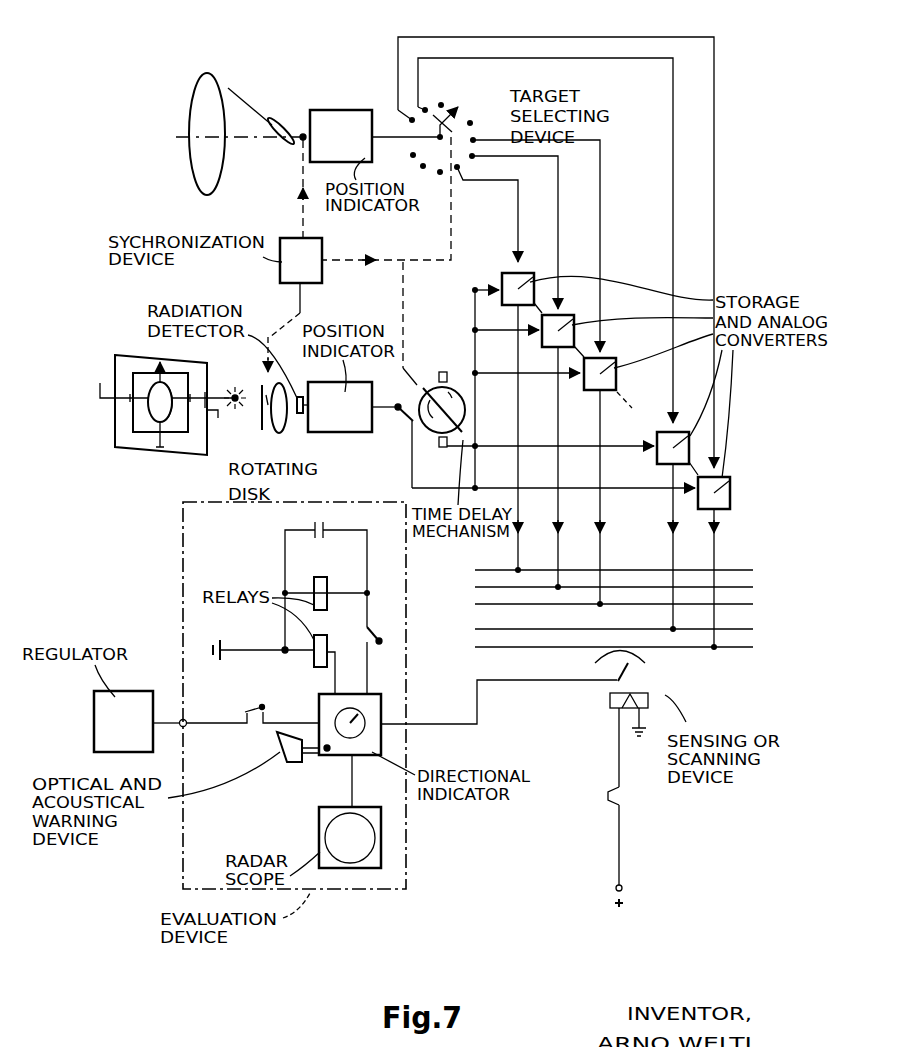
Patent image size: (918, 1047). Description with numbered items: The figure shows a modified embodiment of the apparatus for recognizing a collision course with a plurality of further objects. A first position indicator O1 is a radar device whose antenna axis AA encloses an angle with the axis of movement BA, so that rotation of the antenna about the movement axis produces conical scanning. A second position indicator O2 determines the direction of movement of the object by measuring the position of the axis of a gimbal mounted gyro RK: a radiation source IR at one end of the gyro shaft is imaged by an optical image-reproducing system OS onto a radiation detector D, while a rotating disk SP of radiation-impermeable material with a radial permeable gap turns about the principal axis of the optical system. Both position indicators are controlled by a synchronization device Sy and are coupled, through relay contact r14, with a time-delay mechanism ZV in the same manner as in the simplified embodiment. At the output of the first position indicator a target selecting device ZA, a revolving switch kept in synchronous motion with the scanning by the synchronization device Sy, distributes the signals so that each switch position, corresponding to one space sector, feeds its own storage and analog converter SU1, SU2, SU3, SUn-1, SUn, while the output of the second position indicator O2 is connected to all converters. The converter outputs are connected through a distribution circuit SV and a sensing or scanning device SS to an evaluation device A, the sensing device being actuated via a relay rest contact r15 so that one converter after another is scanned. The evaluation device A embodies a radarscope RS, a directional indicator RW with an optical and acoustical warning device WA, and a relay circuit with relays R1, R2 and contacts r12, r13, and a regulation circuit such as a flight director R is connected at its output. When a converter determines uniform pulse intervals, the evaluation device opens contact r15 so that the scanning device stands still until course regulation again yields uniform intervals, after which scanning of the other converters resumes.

The antenna axis AA is at (204, 76).
The axis of movement BA is at (222, 136).
The first position indicator O1 is at (341, 125).
The target selecting device ZA is at (556, 252).
The synchronization device Sy is at (317, 260).
The storage and analog converter SU1 is at (498, 414).
The storage and analog converter SU2 is at (578, 439).
The storage and analog converter SU3 is at (617, 469).
The storage and analog converter SUn-1 is at (650, 519).
The storage and analog converter SUn is at (731, 547).
The gimbal mounted gyro RK is at (159, 414).
The radiation source IR is at (236, 388).
The rotating disk SP is at (258, 430).
The optical image-reproducing system OS is at (282, 433).
The radiation detector D is at (300, 385).
The second position indicator O2 is at (340, 421).
The relay contact r14 is at (395, 436).
The time-delay mechanism ZV is at (436, 432).
The distribution circuit SV is at (631, 608).
The sensing or scanning device SS is at (634, 694).
The relay rest contact r15 is at (636, 807).
The evaluation device A is at (294, 696).
The relay R2 is at (326, 586).
The relay R1 is at (286, 660).
The relay contact r12 is at (385, 649).
The relay contact r13 is at (252, 704).
The flight director R is at (126, 697).
The optical and acoustical warning device WA is at (325, 752).
The directional indicator RW is at (375, 738).
The radarscope RS is at (327, 828).